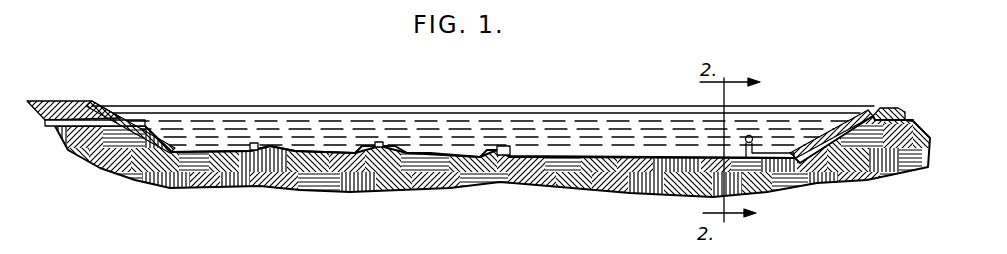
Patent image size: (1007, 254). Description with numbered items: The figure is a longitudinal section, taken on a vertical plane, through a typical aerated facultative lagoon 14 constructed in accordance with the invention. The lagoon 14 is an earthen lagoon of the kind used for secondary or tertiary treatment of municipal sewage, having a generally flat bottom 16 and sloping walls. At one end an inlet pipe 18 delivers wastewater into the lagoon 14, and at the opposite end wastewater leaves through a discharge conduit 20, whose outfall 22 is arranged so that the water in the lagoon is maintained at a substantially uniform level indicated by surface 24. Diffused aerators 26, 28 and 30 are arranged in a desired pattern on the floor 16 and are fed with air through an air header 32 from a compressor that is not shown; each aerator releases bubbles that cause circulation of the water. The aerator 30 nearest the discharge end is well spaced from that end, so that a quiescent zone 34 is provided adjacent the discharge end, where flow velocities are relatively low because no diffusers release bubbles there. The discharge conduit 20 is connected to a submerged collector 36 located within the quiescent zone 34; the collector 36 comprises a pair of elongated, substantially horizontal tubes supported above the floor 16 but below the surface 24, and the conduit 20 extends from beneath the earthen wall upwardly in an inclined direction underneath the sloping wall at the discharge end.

The lagoon 14 is at (445, 138).
The bottom 16 is at (316, 150).
The inlet pipe 18 is at (97, 121).
The discharge conduit 20 is at (873, 110).
The outfall 22 is at (913, 120).
The surface 24 is at (347, 112).
The diffused aerator 26 is at (257, 143).
The diffused aerator 28 is at (376, 145).
The diffused aerator 30 is at (497, 146).
The air header 32 is at (163, 145).
The quiescent zone 34 is at (620, 133).
The submerged collector 36 is at (751, 140).